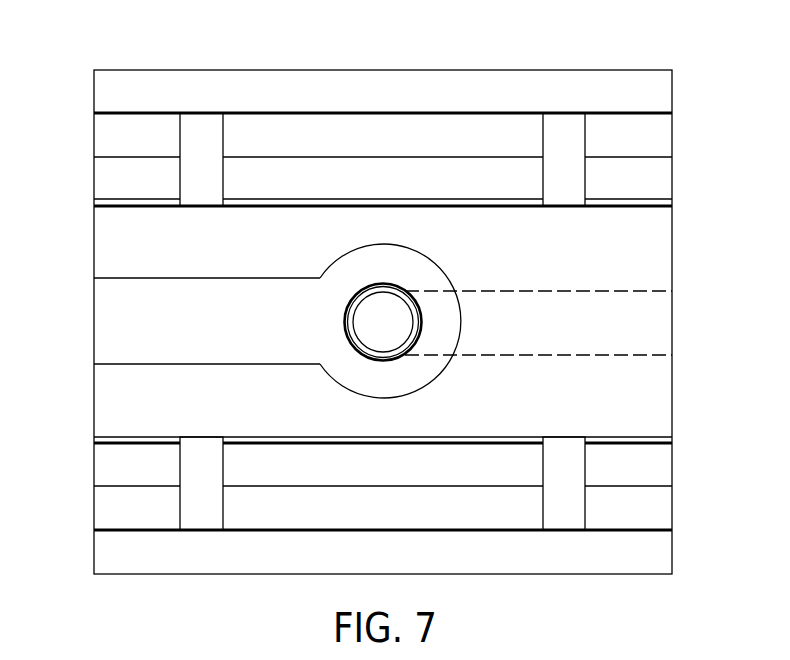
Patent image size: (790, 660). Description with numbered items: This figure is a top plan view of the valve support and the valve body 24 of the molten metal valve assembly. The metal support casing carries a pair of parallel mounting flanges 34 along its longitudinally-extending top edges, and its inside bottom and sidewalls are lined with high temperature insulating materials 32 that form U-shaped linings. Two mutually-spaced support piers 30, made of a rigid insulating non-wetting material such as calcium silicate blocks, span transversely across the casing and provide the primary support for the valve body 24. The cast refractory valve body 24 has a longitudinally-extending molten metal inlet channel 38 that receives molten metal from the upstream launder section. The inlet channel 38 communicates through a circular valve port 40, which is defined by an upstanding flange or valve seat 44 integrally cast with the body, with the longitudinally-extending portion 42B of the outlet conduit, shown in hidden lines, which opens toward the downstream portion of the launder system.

The valve body 24 is at (598, 271).
The support piers 30 is at (218, 169).
The high temperature insulating materials 32 is at (103, 142).
The mounting flanges 34 is at (664, 92).
The molten metal inlet channel 38 is at (187, 346).
The valve port 40 is at (400, 337).
The longitudinally-extending portion of the outlet conduit 42B is at (618, 330).
The valve seat 44 is at (400, 283).